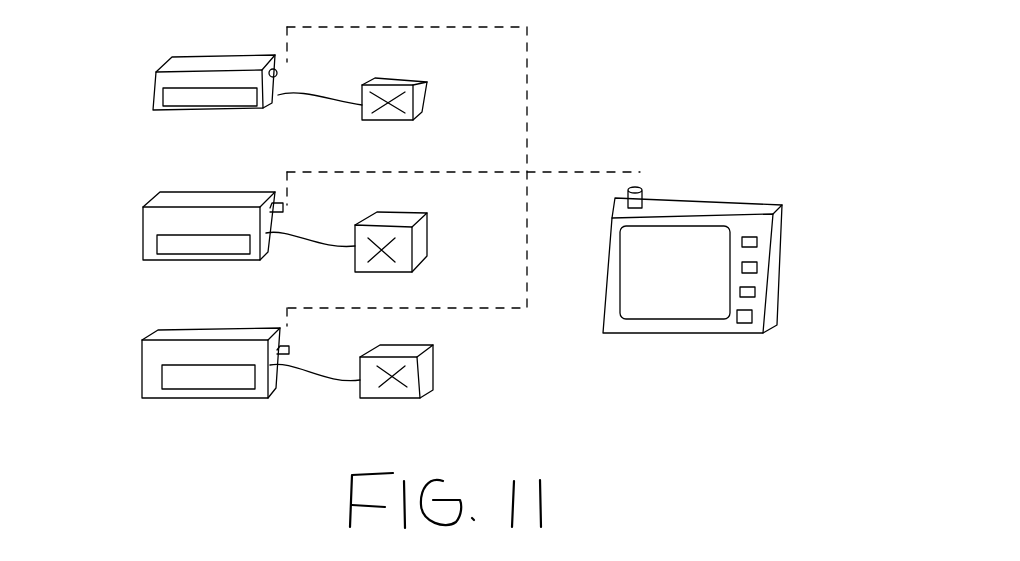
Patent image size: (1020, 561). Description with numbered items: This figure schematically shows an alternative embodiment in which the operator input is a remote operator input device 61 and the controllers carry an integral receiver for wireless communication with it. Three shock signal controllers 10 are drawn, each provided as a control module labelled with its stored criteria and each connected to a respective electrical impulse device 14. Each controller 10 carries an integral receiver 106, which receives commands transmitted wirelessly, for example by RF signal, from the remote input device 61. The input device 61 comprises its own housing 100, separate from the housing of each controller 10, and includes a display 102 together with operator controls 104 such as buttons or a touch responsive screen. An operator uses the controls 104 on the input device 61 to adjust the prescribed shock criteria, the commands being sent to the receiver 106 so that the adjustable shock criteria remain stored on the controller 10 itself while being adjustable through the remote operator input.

The shock signal controller 10 is at (153, 80).
The electrical impulse device 14 is at (486, 120).
The remote operator input device 61 is at (739, 87).
The housing 100 is at (785, 222).
The display 102 is at (673, 288).
The operator controls 104 is at (888, 328).
The integral receiver 106 is at (359, 57).